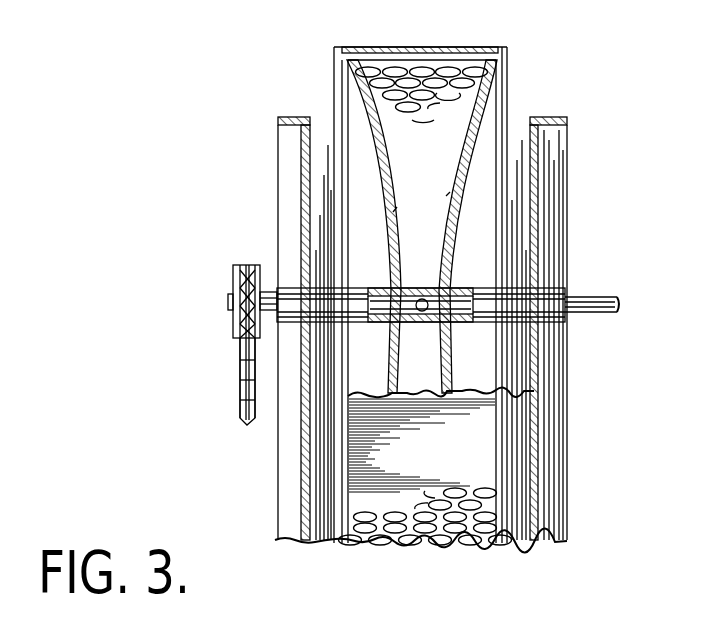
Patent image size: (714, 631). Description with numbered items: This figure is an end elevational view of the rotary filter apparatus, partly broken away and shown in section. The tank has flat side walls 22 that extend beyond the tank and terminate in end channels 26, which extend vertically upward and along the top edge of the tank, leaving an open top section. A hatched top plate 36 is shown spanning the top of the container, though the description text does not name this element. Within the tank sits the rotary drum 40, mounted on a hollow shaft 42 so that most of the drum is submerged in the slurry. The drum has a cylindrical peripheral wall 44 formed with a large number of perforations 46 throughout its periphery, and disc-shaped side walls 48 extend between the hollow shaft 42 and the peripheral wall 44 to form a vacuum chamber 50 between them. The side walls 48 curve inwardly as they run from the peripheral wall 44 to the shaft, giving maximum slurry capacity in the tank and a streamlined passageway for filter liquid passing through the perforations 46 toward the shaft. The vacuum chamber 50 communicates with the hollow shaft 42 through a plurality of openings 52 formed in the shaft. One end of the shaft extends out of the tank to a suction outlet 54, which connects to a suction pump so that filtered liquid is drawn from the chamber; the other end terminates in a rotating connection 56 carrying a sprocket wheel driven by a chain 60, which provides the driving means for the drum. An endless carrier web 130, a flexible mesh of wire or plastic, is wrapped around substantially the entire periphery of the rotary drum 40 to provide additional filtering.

The flat side walls 22 is at (306, 200).
The end channels 26 is at (285, 121).
The container 36 is at (320, 116).
The rotary drum 40 is at (353, 78).
The hollow shaft 42 is at (548, 300).
The cylindrical peripheral wall 44 is at (350, 542).
The perforations 46 is at (457, 72).
The side walls 48 is at (446, 196).
The vacuum chamber 50 is at (414, 233).
The openings 52 is at (416, 291).
The suction outlet 54 is at (600, 311).
The rotating connection 56 is at (271, 300).
The chain 60 is at (240, 350).
The endless carrier web 130 is at (372, 48).